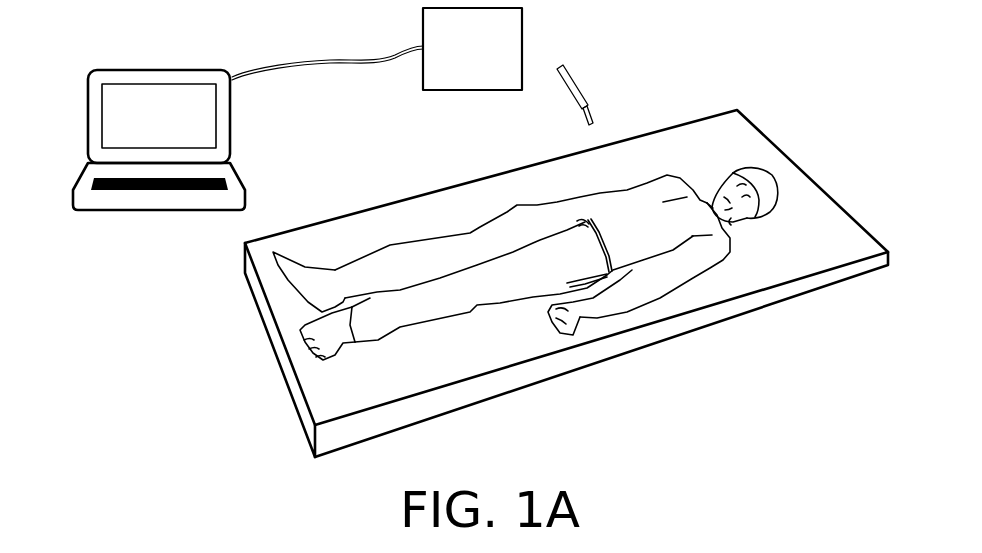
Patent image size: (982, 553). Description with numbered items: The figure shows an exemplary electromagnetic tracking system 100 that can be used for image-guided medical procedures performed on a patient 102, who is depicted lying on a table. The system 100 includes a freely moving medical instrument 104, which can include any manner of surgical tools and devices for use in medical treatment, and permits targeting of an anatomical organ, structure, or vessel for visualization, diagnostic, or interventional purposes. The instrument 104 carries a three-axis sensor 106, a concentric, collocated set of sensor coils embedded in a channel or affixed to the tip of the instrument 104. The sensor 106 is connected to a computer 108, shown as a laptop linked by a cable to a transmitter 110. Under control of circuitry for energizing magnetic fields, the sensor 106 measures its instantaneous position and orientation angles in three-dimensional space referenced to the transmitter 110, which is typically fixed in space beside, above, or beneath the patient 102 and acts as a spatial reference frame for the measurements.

The EMT system 100 is at (815, 79).
The patient 102 is at (700, 236).
The medical instrument 104 is at (573, 83).
The three-axis sensor 106 is at (597, 116).
The computer 108 is at (88, 81).
The transmitter 110 is at (494, 46).